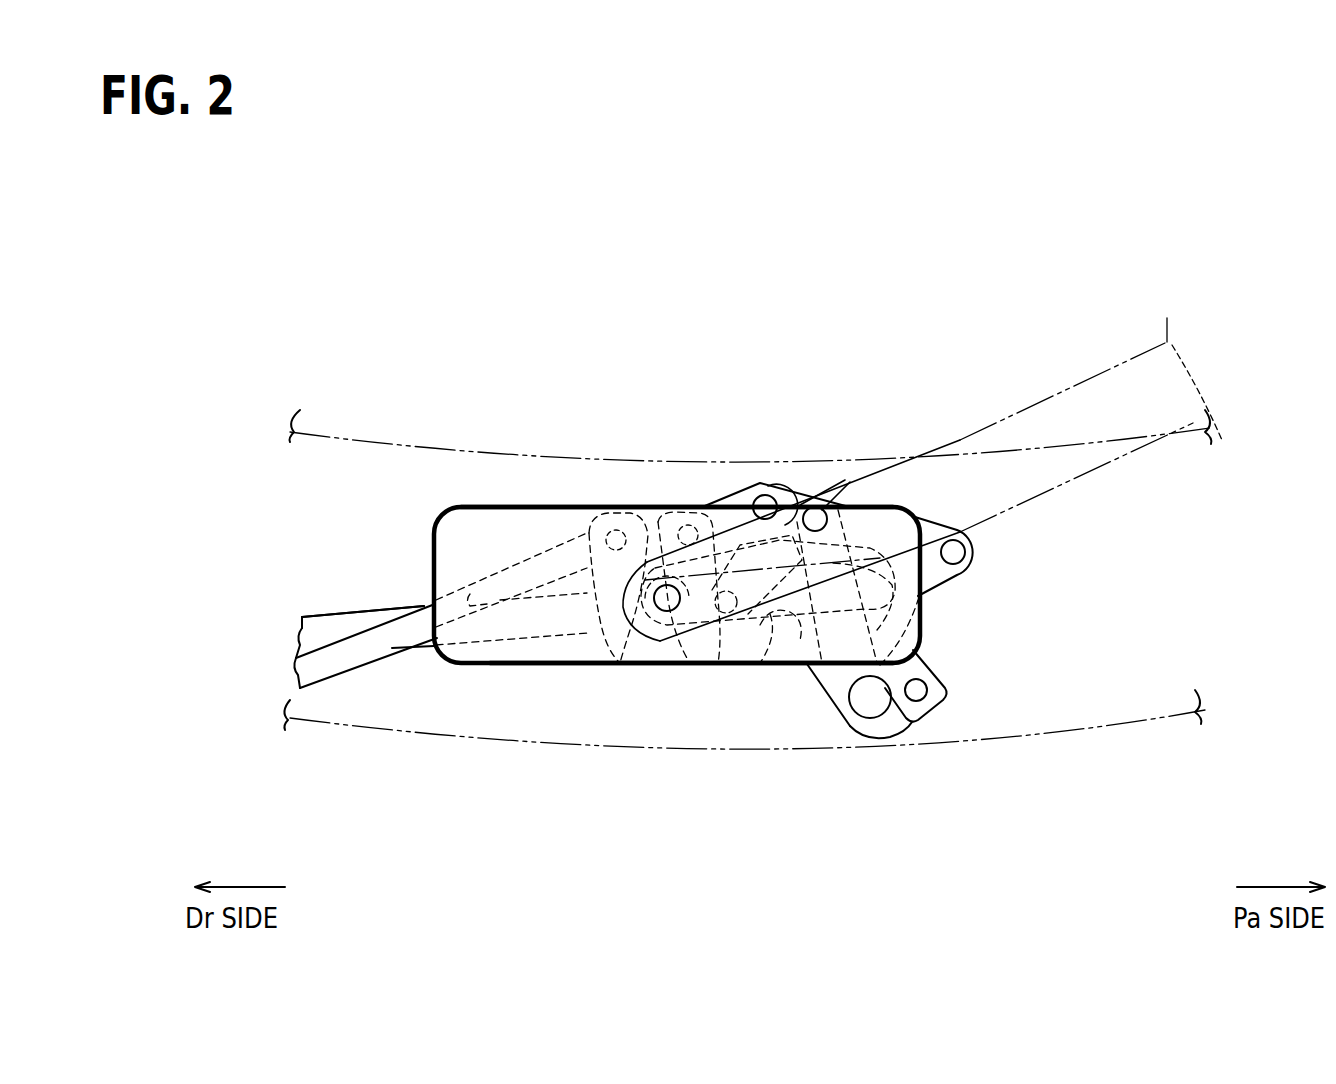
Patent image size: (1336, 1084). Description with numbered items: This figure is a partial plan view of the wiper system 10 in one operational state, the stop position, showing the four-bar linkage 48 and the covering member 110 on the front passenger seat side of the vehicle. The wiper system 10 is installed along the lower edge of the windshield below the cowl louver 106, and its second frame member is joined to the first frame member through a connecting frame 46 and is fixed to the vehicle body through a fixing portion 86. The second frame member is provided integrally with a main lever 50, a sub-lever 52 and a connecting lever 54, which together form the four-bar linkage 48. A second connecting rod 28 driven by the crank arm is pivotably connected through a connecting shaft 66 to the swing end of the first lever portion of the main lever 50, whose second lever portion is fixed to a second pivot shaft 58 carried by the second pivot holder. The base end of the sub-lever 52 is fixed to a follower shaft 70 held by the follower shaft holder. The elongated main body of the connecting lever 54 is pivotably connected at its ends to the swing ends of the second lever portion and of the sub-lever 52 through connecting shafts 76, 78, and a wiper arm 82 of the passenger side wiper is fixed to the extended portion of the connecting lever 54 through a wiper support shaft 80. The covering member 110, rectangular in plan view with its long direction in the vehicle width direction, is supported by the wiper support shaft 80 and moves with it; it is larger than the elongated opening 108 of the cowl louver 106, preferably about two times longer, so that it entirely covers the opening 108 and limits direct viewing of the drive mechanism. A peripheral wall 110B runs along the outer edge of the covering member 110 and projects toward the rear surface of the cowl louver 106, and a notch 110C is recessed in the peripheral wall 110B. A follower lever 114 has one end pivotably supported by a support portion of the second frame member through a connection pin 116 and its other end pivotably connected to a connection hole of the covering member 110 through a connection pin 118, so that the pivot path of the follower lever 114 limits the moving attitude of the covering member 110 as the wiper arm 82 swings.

The wiper system 10 is at (1082, 235).
The second connecting rod 28 is at (328, 680).
The connecting frame 46 is at (322, 618).
The four-bar linkage 48 is at (1028, 579).
The main lever 50 is at (672, 640).
The sub-lever 52 is at (938, 519).
The connecting lever 54 is at (725, 492).
The second pivot shaft 58 is at (728, 615).
The connecting shaft 66 is at (616, 530).
The follower shaft 70 is at (960, 552).
The connecting shaft 76 is at (688, 524).
The connecting shaft 78 is at (766, 495).
The wiper support shaft 80 is at (662, 608).
The wiper arm 82 is at (1113, 370).
The fixing portion 86 is at (868, 700).
The cowl louver 106 is at (465, 738).
The opening 108 is at (782, 637).
The covering member 110 is at (467, 505).
The peripheral wall 110B is at (521, 506).
The notch 110C is at (500, 664).
The follower lever 114 is at (922, 647).
The connection pin 116 is at (926, 692).
The connection pin 118 is at (815, 507).